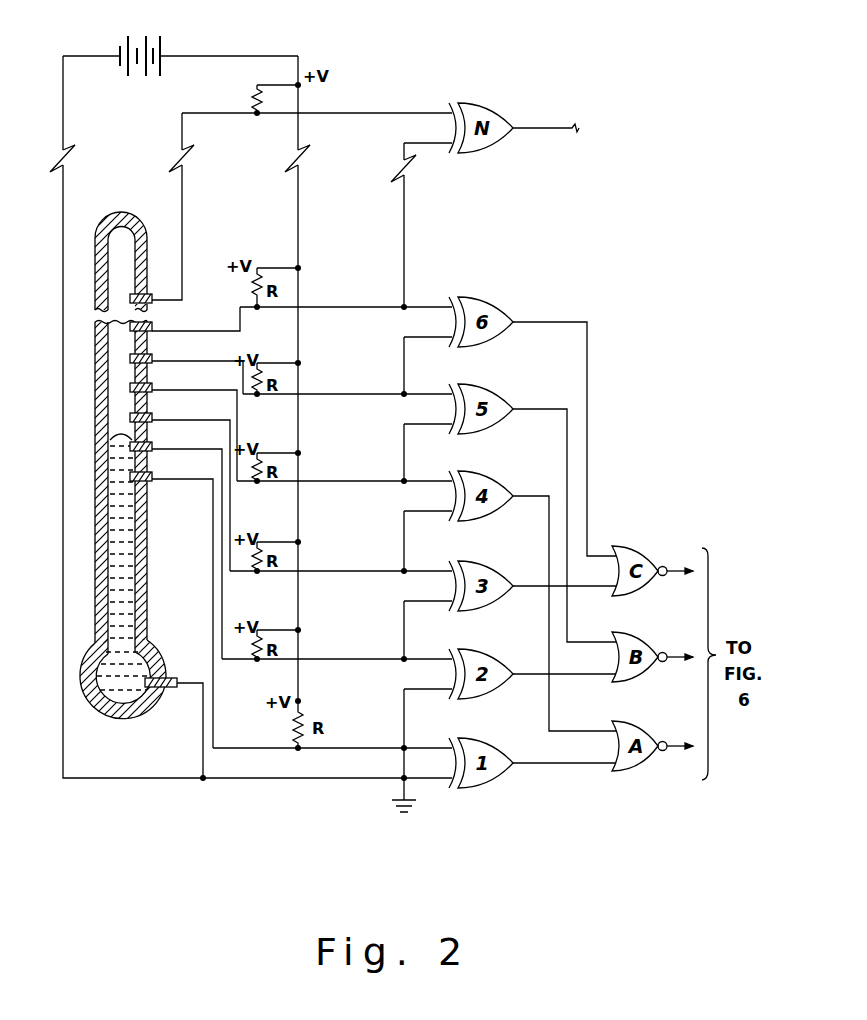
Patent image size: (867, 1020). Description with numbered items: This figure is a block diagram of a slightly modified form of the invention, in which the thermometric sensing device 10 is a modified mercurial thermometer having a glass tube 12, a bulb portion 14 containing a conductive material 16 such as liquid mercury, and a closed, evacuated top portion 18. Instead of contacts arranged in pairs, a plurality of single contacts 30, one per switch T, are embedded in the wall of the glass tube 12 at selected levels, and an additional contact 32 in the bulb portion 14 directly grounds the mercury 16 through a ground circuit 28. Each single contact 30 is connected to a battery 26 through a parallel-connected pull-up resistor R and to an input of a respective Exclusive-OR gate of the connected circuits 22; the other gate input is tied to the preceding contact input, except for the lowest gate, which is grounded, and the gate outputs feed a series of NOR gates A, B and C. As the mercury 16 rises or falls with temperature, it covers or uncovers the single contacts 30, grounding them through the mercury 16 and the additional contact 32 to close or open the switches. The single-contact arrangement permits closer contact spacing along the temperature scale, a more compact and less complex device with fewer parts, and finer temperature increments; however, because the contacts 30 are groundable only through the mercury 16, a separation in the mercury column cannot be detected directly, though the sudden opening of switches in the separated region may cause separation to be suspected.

The thermometric sensing device 10 is at (142, 456).
The glass tube 12 is at (138, 613).
The bulb portion 14 is at (122, 706).
The conductive material 16 is at (122, 539).
The closed, evacuated top portion 18 is at (119, 238).
The connected circuits 22 is at (589, 375).
The battery 26 is at (160, 55).
The ground circuit 28 is at (151, 779).
The single contacts 30 is at (151, 294).
The additional contact 32 is at (166, 680).